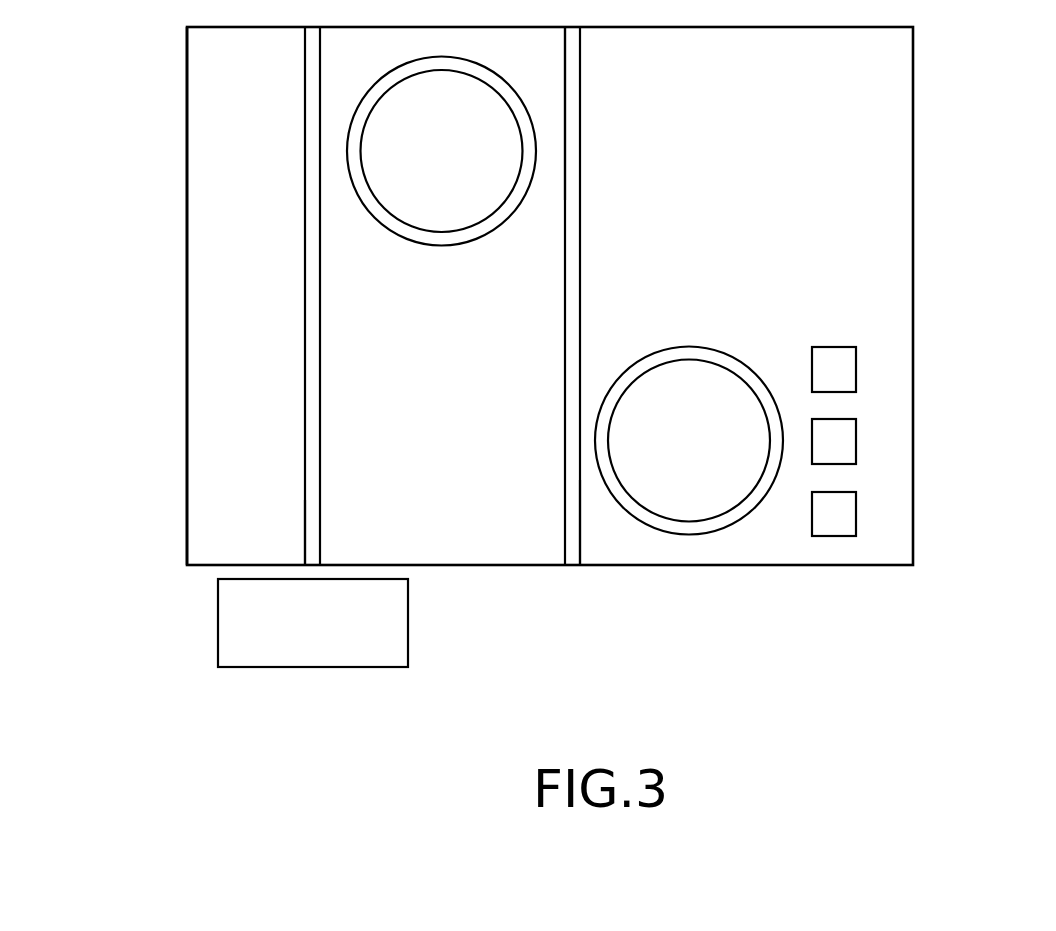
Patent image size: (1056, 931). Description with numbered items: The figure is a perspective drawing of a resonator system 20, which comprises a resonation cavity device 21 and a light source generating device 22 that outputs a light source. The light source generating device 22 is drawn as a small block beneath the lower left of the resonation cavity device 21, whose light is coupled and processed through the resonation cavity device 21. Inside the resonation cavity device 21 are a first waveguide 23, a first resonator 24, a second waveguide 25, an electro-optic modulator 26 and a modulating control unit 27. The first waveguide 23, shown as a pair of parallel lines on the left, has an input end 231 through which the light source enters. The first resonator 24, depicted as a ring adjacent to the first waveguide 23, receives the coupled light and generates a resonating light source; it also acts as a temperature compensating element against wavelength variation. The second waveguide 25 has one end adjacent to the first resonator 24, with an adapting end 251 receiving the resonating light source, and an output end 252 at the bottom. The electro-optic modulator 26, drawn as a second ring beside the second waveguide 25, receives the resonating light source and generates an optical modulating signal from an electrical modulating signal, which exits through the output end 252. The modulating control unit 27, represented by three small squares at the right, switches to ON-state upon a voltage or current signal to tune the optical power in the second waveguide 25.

The resonator system 20 is at (1027, 703).
The resonation cavity device 21 is at (186, 213).
The light source generating device 22 is at (221, 630).
The first waveguide 23 is at (307, 339).
The input end 231 is at (314, 549).
The first resonator 24 is at (393, 233).
The second waveguide 25 is at (580, 256).
The adapting end 251 is at (572, 165).
The output end 252 is at (573, 565).
The electro-optic modulator 26 is at (720, 522).
The modulating control unit 27 is at (883, 362).